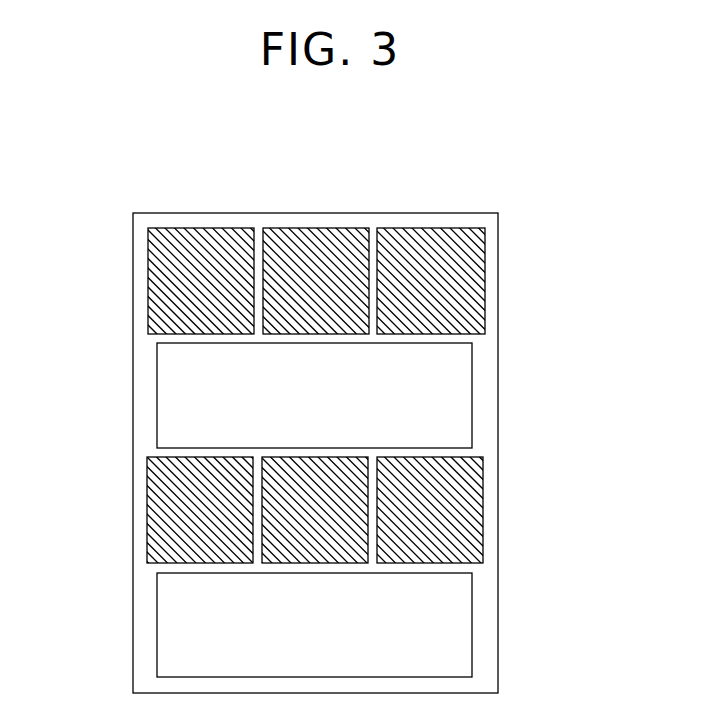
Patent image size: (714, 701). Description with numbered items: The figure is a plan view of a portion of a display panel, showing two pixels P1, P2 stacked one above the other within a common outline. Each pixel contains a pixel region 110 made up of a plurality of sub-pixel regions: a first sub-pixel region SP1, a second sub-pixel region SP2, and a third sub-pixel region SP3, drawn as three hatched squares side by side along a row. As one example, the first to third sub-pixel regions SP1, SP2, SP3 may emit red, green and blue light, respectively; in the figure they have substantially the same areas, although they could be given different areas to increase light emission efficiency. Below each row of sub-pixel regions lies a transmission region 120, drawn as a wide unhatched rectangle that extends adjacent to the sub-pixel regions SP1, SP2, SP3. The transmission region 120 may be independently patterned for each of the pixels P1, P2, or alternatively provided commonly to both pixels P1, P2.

The pixel region 110 is at (178, 152).
The first sub-pixel region SP1 is at (200, 228).
The second sub-pixel region SP2 is at (315, 228).
The third sub-pixel region SP3 is at (430, 228).
The pixel P1 is at (127, 342).
The pixel P2 is at (127, 574).
The transmission region 120 is at (472, 397).